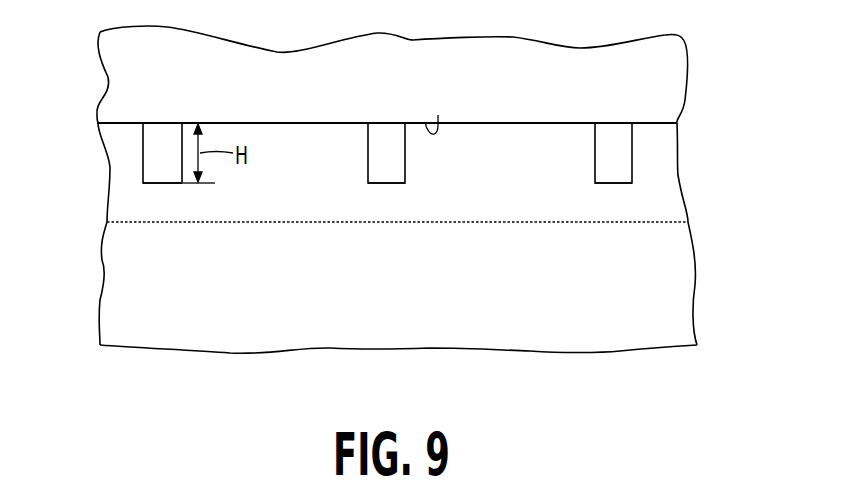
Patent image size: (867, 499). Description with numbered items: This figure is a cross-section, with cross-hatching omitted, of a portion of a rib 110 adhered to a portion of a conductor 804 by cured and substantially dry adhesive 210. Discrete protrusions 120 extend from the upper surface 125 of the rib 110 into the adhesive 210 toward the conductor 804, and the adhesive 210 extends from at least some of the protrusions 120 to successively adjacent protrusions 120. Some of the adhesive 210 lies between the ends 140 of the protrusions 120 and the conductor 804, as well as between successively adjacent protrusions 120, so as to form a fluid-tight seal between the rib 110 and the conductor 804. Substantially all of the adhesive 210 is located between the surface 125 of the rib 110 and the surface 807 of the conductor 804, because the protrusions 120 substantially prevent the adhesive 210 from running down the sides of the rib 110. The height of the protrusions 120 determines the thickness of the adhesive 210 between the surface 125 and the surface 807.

The rib 110 is at (600, 91).
The discrete protrusions 120 is at (155, 161).
The surface 125 is at (438, 116).
The ends 140 is at (157, 184).
The adhesive 210 is at (672, 193).
The conductor 804 is at (545, 300).
The surface 807 is at (125, 221).